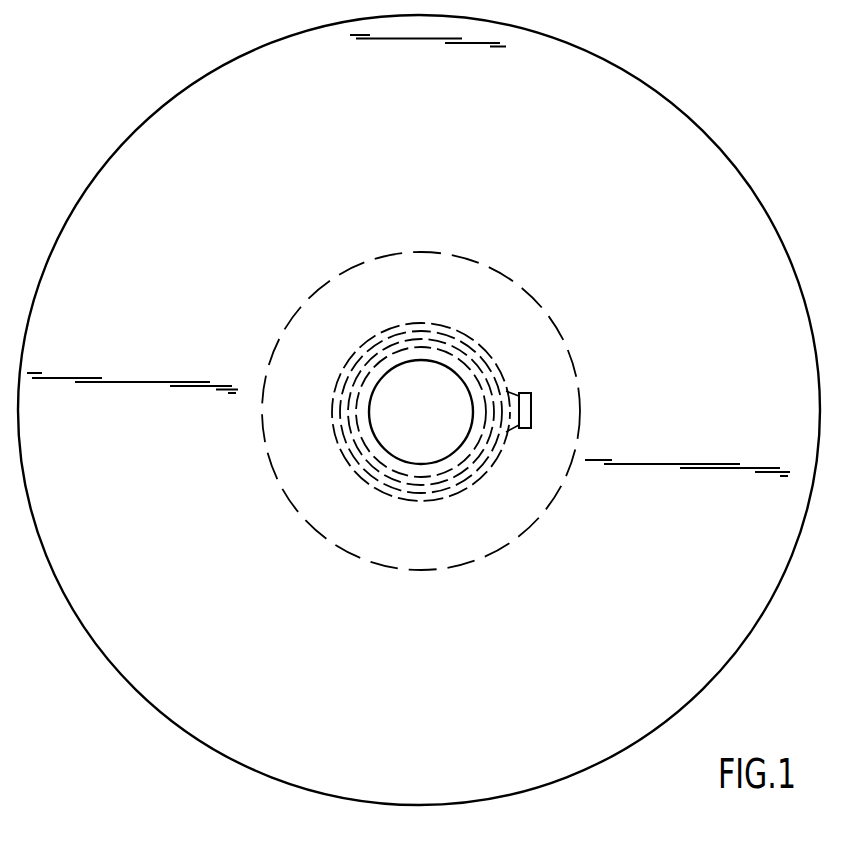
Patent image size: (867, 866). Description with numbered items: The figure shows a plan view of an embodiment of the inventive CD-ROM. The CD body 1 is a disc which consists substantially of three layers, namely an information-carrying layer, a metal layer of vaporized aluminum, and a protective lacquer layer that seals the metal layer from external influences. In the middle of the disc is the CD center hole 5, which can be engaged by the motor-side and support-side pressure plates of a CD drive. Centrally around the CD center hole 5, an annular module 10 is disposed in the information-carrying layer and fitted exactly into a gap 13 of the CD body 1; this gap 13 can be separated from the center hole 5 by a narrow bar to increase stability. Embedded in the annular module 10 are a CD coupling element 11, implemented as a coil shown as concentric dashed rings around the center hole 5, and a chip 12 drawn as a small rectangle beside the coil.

The CD body 1 is at (146, 702).
The CD center hole 5 is at (432, 424).
The annular module 10 is at (436, 300).
The CD coupling element 11 is at (470, 345).
The chip 12 is at (531, 410).
The gap 13 is at (509, 543).